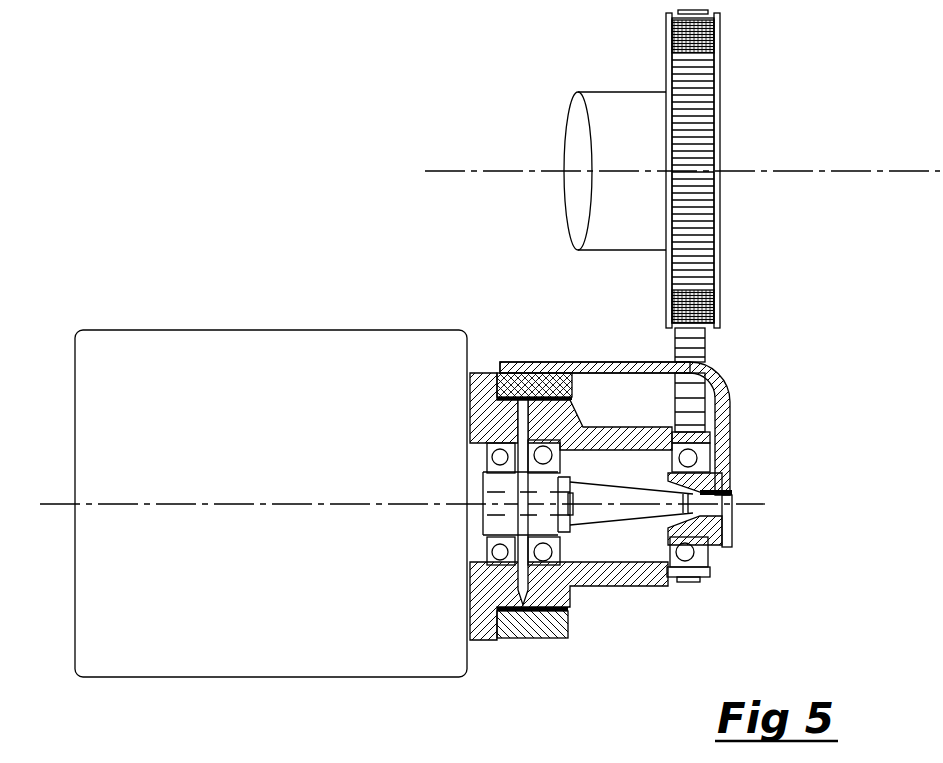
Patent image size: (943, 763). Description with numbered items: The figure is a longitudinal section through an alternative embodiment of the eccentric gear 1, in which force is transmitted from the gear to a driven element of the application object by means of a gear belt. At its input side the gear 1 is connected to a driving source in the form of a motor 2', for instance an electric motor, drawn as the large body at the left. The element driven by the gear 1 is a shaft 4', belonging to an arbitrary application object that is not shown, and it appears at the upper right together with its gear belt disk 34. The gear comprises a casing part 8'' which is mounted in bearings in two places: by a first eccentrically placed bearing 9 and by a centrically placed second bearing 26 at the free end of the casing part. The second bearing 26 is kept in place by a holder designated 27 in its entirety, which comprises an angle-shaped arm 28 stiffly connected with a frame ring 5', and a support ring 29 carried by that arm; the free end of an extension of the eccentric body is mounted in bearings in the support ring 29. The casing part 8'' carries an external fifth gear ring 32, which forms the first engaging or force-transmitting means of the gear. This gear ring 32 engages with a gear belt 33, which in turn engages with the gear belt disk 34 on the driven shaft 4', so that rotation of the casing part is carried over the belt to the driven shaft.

The eccentric gear 1 is at (638, 453).
The motor 2' is at (271, 479).
The driven shaft 4' is at (615, 151).
The frame ring 5' is at (534, 349).
The casing part 8'' is at (569, 508).
The first eccentrically placed bearing 9 is at (580, 426).
The second bearing 26 is at (682, 567).
The holder 27 is at (733, 458).
The angle-shaped arm 28 is at (621, 370).
The support ring 29 is at (727, 535).
The fifth gear ring 32 is at (691, 584).
The gear belt 33 is at (700, 350).
The gear belt disk 34 is at (710, 92).